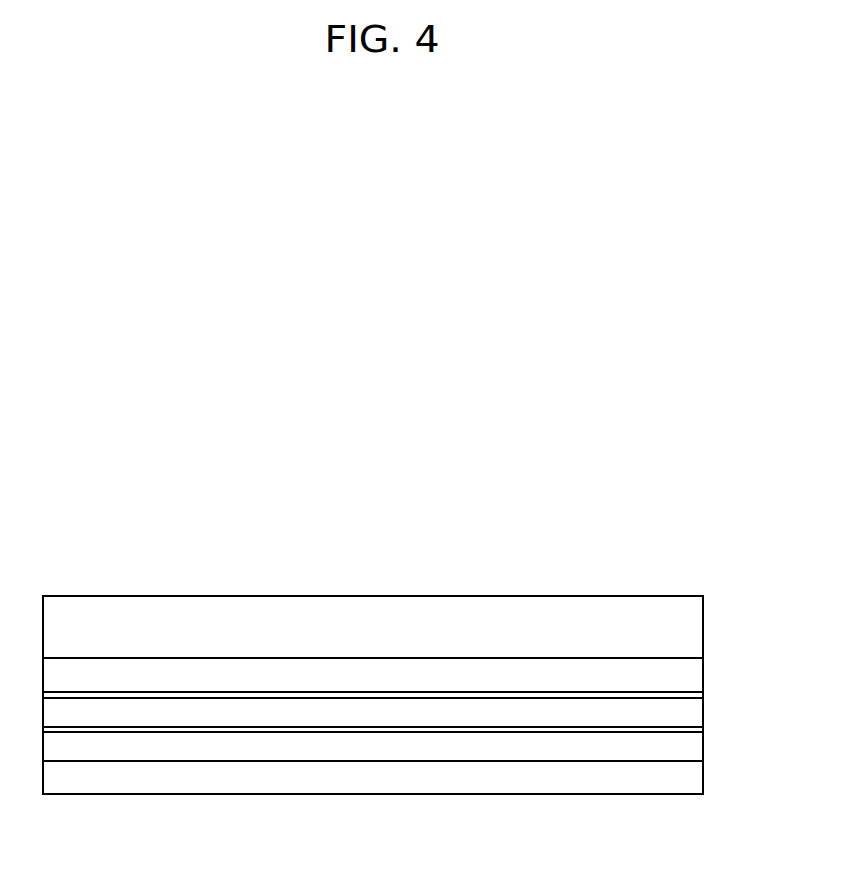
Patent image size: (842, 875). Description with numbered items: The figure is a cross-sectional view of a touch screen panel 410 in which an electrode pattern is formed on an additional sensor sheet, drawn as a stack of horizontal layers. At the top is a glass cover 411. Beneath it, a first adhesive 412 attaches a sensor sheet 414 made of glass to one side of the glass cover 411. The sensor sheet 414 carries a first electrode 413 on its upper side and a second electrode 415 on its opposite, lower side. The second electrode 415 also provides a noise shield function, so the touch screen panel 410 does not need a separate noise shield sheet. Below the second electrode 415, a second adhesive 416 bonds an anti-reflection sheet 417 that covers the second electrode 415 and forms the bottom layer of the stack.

The touch screen panel 410 is at (771, 489).
The glass cover 411 is at (703, 618).
The first adhesive 412 is at (703, 661).
The first electrode 413 is at (703, 690).
The sensor sheet 414 is at (703, 721).
The second electrode 415 is at (703, 731).
The second adhesive 416 is at (703, 761).
The anti-reflection sheet 417 is at (703, 793).